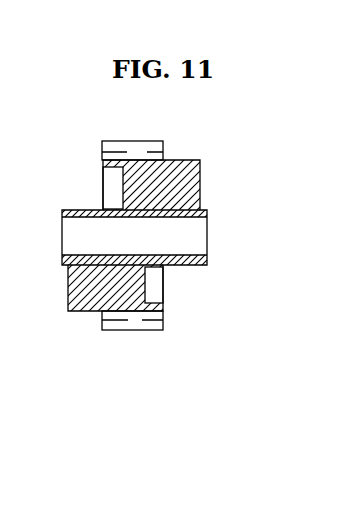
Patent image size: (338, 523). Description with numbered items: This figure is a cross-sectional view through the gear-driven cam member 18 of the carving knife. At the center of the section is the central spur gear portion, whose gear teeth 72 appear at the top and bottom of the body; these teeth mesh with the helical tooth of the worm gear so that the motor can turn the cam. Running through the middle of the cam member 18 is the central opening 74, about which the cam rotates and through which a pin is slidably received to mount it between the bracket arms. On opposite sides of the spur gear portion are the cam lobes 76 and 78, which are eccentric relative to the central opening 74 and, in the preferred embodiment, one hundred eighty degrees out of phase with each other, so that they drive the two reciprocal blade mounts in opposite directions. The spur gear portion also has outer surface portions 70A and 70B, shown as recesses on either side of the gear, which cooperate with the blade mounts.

The cam member 18 is at (242, 115).
The outer surface portion 70A is at (103, 172).
The outer surface portion 70B is at (163, 309).
The gear teeth 72 is at (161, 141).
The central opening 74 is at (84, 255).
The cam lobe 76 is at (73, 312).
The cam lobe 78 is at (200, 160).